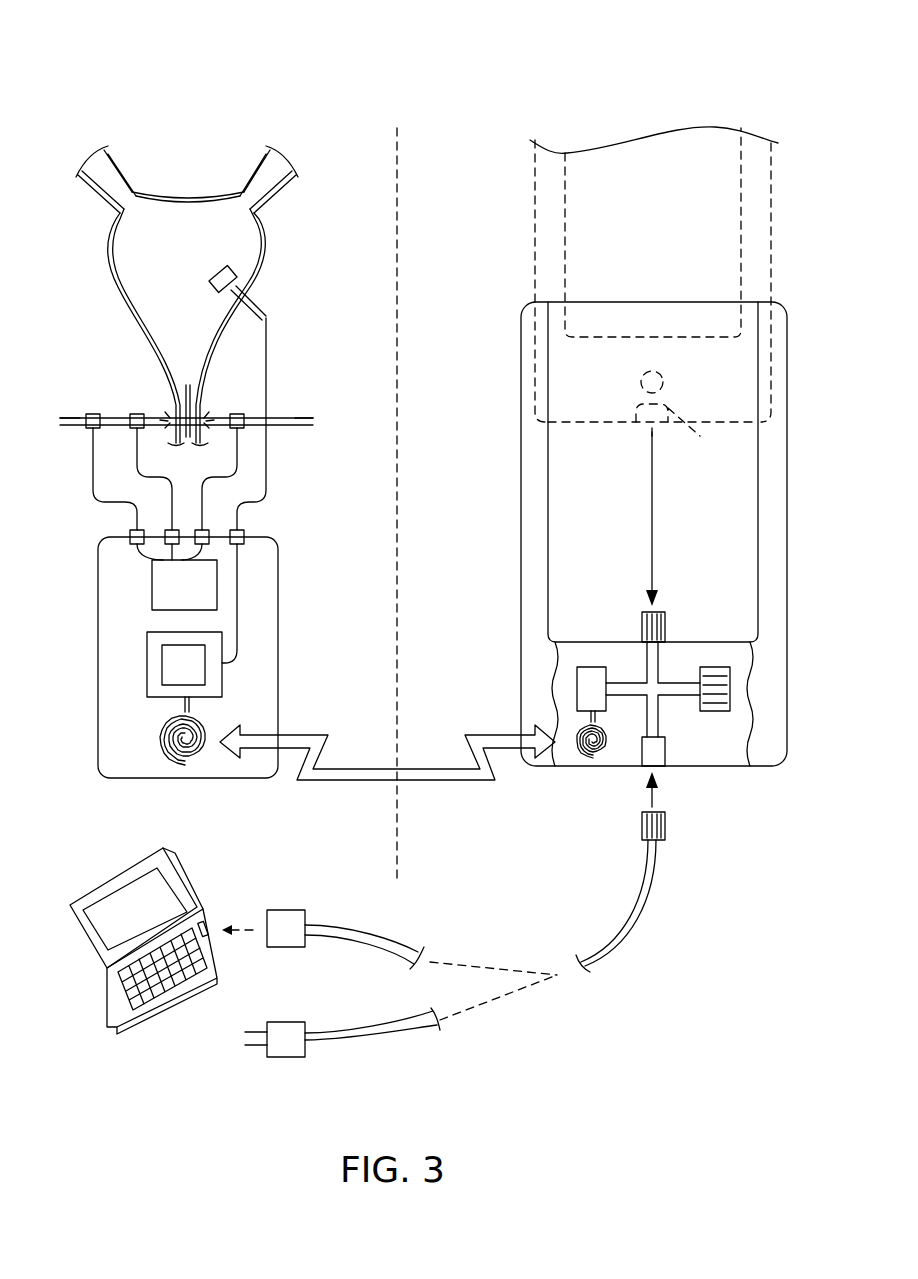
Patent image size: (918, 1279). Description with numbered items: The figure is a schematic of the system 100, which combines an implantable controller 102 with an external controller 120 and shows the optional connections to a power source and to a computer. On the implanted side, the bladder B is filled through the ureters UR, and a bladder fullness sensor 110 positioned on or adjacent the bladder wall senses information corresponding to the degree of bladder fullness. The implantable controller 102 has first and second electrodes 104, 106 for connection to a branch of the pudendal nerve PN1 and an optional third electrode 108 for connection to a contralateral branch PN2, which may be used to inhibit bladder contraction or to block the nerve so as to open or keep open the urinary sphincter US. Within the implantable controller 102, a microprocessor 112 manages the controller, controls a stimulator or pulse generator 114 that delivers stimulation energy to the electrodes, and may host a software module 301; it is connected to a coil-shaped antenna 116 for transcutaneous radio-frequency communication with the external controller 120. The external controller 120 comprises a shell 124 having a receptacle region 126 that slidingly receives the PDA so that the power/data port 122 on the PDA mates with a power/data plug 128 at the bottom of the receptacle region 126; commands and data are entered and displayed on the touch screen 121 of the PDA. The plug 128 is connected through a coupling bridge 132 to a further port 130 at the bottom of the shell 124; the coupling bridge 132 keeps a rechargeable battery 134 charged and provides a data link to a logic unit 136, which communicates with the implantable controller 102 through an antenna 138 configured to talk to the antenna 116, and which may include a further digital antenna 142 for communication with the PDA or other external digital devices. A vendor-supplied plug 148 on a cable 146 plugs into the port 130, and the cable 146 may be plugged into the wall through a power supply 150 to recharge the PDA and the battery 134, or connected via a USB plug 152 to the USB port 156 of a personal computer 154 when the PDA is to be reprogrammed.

The system 100 is at (97, 40).
The external controller 120 is at (795, 70).
The ureters UR is at (110, 153).
The bladder B is at (262, 238).
The urethral sphincter US is at (170, 405).
The bladder fullness sensor 110 is at (252, 273).
The first electrode 104 is at (86, 420).
The second electrode 106 is at (137, 413).
The third electrode 108 is at (237, 413).
The pudendal nerve PN1 is at (80, 427).
The contralateral pudendal nerve branch PN2 is at (302, 427).
The implantable controller 102 is at (98, 558).
The stimulator or pulse generator 114 is at (152, 582).
The microprocessor 112 is at (147, 650).
The software module 301 is at (162, 672).
The antenna 116 is at (158, 740).
The element PDA is at (782, 193).
The touch screen 121 is at (717, 267).
The power/data port 122 is at (678, 488).
The shell 124 is at (787, 465).
The receptacle region 126 is at (745, 538).
The power/data plug 128 is at (666, 624).
The digital antenna 142 is at (589, 658).
The logic unit 136 is at (577, 686).
The rechargeable battery 134 is at (730, 690).
The coupling bridge 132 is at (665, 730).
The port 130 is at (667, 757).
The antenna 138 is at (593, 760).
The vendor-supplied plug 148 is at (666, 832).
The cable 146 is at (640, 912).
The USB plug 152 is at (287, 910).
The power supply 150 is at (280, 1058).
The personal computer 154 is at (120, 990).
The USB port 156 is at (208, 922).